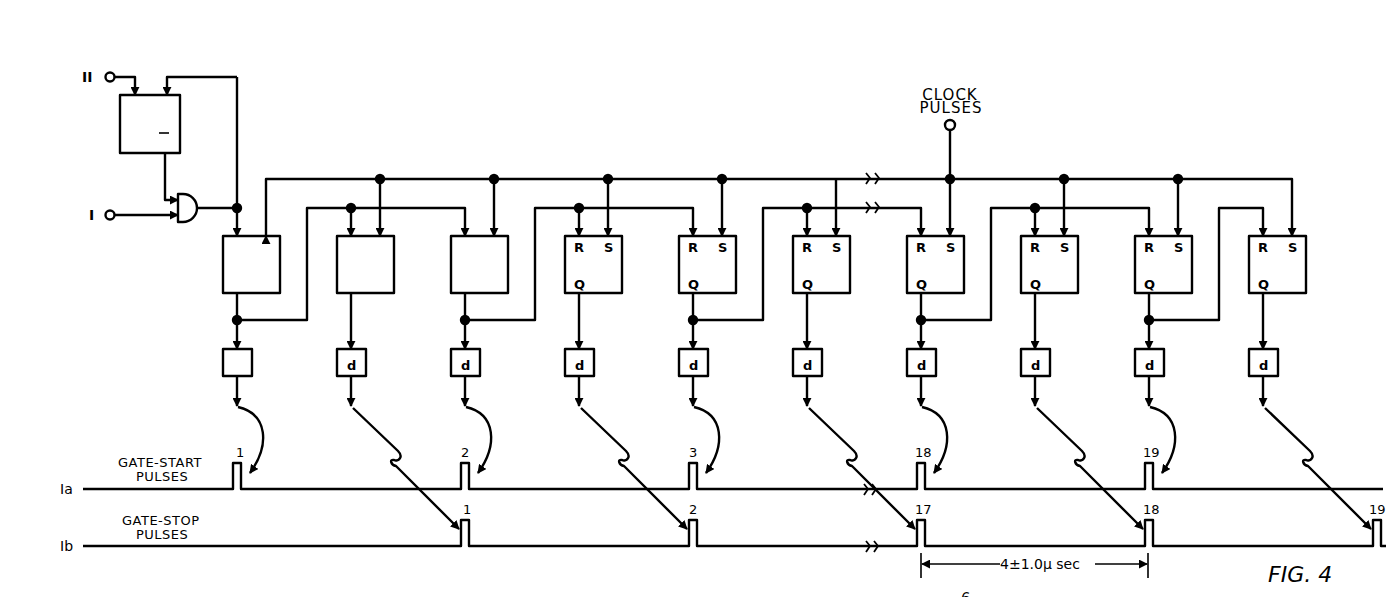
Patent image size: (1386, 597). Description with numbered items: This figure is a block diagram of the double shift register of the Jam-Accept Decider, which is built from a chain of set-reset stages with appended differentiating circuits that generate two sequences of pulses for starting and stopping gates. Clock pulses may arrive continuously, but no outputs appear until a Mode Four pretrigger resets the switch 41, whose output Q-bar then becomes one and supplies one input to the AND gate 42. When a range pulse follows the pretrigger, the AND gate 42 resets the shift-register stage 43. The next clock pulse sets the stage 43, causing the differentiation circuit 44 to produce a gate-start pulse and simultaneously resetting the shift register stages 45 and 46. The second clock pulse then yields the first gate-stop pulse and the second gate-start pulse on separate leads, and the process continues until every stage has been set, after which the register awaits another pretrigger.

The switch 41 is at (181, 122).
The AND gate 42 is at (196, 196).
The shift-register stage 43 is at (223, 254).
The differentiation circuit 44 is at (222, 358).
The shift register stage 45 is at (394, 247).
The shift register stage 46 is at (451, 272).